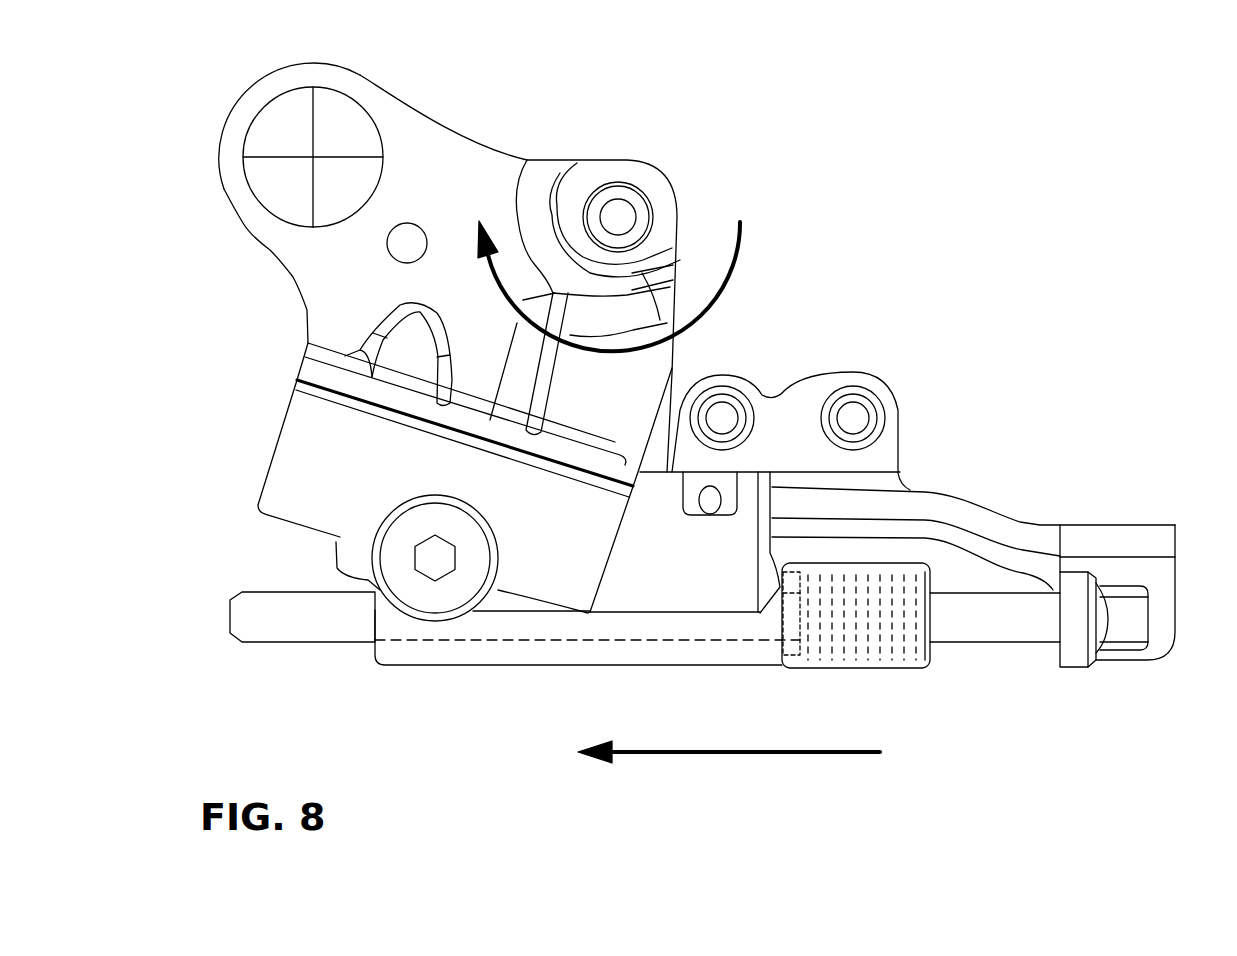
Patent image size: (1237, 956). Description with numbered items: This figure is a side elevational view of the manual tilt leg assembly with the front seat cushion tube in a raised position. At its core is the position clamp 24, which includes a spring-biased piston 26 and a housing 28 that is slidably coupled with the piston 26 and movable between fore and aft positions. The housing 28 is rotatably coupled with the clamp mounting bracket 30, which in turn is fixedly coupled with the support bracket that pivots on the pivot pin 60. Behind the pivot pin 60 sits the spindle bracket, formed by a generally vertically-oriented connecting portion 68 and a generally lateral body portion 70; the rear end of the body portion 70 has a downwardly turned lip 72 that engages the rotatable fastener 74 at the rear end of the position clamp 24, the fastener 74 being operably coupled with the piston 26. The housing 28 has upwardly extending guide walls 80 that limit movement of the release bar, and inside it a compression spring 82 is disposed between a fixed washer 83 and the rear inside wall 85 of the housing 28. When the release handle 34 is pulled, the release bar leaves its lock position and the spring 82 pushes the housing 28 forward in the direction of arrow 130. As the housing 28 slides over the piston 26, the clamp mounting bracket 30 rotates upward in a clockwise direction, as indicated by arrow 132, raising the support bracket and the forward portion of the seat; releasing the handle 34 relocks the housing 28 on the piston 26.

The position clamp 24 is at (550, 667).
The spring-biased piston 26 is at (307, 628).
The housing 28 is at (905, 625).
The clamp mounting bracket 30 is at (320, 443).
The release handle 34 is at (727, 483).
The pivot pin 60 is at (630, 185).
The connecting portion 68 is at (900, 418).
The body portion 70 is at (920, 500).
The downwardly turned lip 72 is at (1133, 568).
The rotatable fastener 74 is at (1120, 622).
The guide walls 80 is at (725, 580).
The spring 82 is at (835, 665).
The fixed washer 83 is at (790, 665).
The rear inside wall 85 is at (930, 648).
The arrow 130 is at (645, 760).
The arrow 132 is at (745, 290).